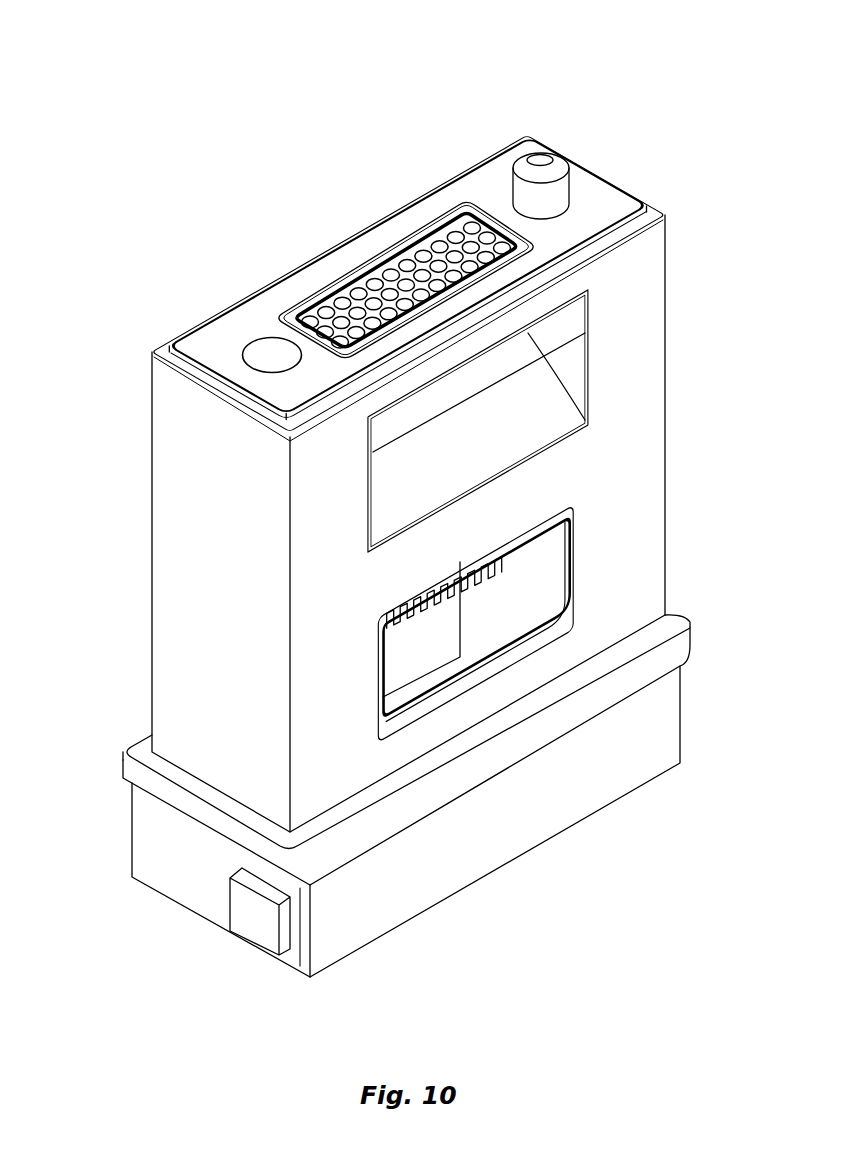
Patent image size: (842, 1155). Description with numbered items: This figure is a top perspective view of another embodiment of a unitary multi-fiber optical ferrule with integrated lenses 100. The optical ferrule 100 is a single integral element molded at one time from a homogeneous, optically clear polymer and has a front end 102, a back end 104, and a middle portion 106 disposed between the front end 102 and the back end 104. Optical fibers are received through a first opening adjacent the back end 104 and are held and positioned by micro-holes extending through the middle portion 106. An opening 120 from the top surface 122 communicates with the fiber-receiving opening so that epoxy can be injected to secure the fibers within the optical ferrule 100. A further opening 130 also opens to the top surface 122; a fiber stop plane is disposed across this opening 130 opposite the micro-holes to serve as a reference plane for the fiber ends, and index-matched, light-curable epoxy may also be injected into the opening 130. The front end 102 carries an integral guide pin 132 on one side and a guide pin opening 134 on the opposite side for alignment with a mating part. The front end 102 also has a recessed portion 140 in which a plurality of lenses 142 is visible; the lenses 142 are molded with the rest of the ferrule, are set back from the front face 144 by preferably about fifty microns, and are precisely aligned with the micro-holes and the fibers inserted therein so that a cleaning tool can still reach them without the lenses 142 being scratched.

The unitary multi-fiber optical ferrule with integrated lenses 100 is at (645, 93).
The front end 102 is at (213, 340).
The back end 104 is at (492, 873).
The middle portion 106 is at (682, 285).
The opening 120 is at (430, 467).
The top surface 122 is at (303, 571).
The opening 130 is at (557, 586).
The integral guide pin 132 is at (538, 172).
The guide pin opening 134 is at (272, 355).
The recessed portion 140 is at (443, 213).
The lenses 142 is at (413, 280).
The front face 144 is at (612, 213).